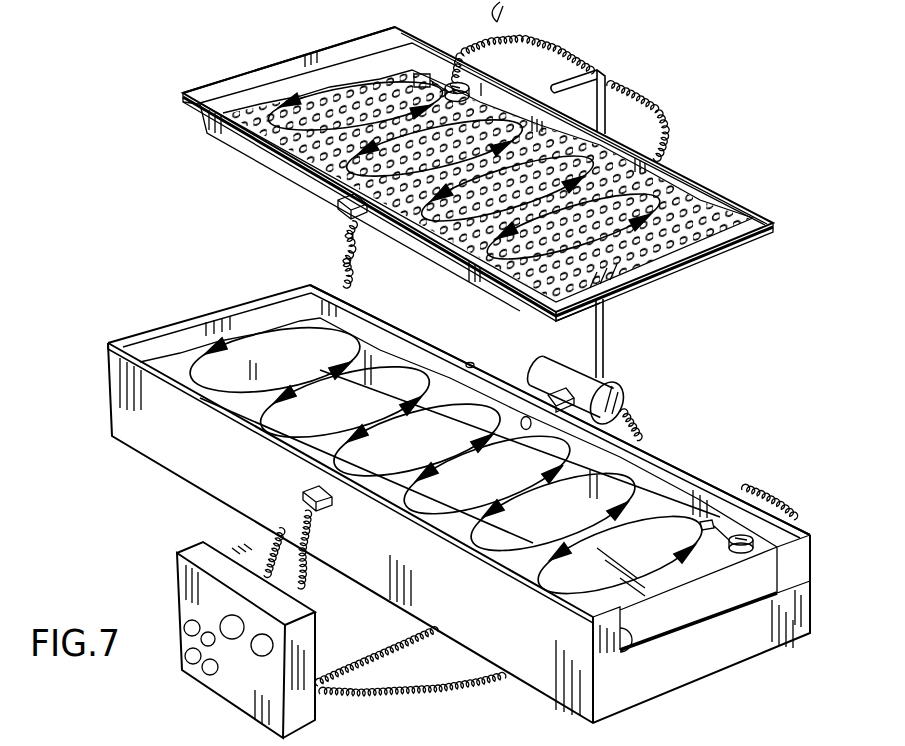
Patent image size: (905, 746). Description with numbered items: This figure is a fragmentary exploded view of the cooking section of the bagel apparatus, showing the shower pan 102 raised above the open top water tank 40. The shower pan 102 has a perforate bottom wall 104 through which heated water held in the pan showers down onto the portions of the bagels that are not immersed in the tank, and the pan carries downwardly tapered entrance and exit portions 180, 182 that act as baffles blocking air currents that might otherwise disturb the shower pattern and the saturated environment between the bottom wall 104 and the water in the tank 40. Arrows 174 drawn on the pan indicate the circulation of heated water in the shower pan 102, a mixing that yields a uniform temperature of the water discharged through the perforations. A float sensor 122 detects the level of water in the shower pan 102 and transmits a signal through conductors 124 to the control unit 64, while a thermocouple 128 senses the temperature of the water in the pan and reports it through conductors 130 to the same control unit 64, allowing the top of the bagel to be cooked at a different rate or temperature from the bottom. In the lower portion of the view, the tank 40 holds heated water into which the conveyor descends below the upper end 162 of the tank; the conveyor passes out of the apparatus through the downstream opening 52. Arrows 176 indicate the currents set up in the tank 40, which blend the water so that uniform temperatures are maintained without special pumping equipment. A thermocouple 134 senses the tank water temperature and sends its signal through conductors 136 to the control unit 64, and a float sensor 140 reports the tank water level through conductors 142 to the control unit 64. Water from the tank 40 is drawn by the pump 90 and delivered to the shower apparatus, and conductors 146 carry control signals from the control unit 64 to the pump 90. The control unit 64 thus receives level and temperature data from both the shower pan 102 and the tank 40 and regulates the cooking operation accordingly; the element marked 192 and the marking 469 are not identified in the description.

The water tank 40 is at (810, 563).
The opening 52 is at (630, 648).
The control unit 64 is at (224, 682).
The pump 90 is at (540, 363).
The shower pan 102 is at (762, 216).
The perforate bottom wall 104 is at (343, 98).
The float sensor 122 is at (462, 82).
The conductors 124 is at (664, 116).
The thermocouple 128 is at (337, 190).
The conductors 130 is at (339, 242).
The thermocouple 134 is at (302, 492).
The conductors 136 is at (305, 540).
The float sensor 140 is at (750, 552).
The conductors 142 is at (752, 490).
The conductors 146 is at (390, 660).
The upper end 162 is at (400, 326).
The arrows 174 is at (620, 238).
The arrows 176 is at (445, 467).
The entrance portion 180 is at (238, 100).
The exit portion 182 is at (522, 298).
The support rod 192 is at (603, 70).
The reference 469 is at (517, 11).